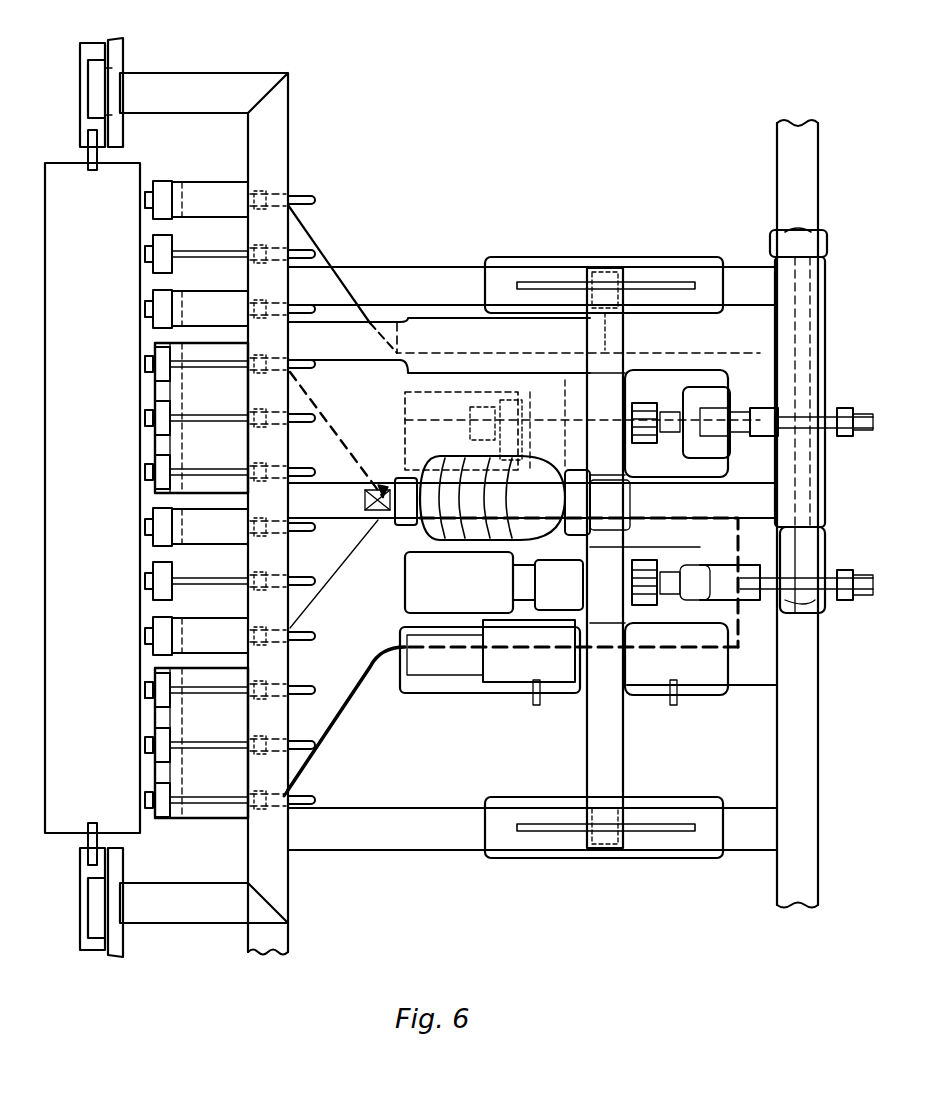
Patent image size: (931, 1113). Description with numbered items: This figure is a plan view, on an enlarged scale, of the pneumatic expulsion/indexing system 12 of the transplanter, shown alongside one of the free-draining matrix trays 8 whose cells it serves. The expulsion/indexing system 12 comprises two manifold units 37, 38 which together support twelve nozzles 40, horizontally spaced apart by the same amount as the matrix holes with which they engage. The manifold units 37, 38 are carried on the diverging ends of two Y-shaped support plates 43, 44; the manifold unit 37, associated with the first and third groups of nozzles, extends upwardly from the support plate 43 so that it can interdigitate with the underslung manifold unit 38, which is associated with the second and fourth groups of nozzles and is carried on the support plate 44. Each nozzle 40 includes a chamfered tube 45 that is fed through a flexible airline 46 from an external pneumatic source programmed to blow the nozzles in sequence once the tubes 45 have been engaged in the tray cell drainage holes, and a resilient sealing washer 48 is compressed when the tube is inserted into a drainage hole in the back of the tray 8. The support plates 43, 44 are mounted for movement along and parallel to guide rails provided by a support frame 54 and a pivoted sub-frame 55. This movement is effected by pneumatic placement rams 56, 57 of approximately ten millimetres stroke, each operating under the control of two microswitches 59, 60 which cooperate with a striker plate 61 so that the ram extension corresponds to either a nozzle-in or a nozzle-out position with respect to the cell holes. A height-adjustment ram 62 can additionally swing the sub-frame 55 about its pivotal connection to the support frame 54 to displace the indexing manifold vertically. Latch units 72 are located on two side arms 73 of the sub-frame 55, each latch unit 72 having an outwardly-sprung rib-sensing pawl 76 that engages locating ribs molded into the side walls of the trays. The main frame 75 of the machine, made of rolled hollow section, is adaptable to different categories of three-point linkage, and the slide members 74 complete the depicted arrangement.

The free-draining matrix tray 8 is at (102, 268).
The expulsion/indexing system 12 is at (600, 112).
The manifold unit 37 is at (197, 390).
The manifold unit 38 is at (207, 180).
The nozzle 40 is at (144, 252).
The Y-shaped support plate 43 is at (333, 716).
The Y-shaped support plate 44 is at (307, 243).
The chamfered tube 45 is at (145, 690).
The flexible airline 46 is at (316, 790).
The resilient sealing washer 48 is at (150, 703).
The support frame 54 is at (790, 744).
The pivoted sub-frame 55 is at (815, 494).
The pneumatic placement ram 56 is at (535, 658).
The pneumatic placement ram 57 is at (530, 380).
The microswitch 59 is at (548, 300).
The microswitch 60 is at (655, 282).
The striker plate 61 is at (605, 282).
The height-adjustment ram 62 is at (440, 470).
The latch unit 72 is at (72, 76).
The side arm 73 is at (225, 73).
The slide block 74 is at (700, 258).
The main frame 75 is at (590, 759).
The rib-sensing pawl 76 is at (88, 157).